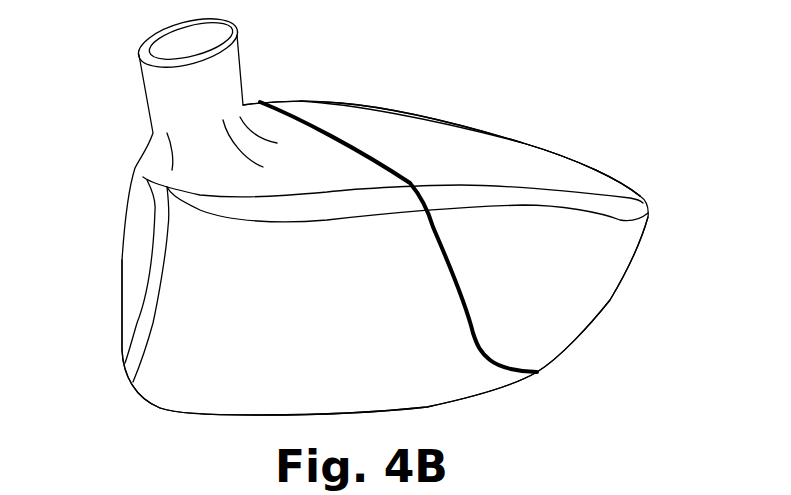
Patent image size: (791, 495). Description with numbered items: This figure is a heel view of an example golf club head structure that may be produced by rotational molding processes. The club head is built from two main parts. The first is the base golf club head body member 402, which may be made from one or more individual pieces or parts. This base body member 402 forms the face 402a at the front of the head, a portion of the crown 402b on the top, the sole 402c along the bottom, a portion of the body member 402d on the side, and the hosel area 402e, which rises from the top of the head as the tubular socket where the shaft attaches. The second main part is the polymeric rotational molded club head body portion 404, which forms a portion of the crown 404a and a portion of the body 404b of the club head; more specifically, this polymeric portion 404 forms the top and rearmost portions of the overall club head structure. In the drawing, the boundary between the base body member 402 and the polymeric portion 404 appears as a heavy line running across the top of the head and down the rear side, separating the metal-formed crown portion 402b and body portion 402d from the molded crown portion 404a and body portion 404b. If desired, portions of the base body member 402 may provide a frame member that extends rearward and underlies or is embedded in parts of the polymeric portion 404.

The base golf club head body member 402 is at (120, 112).
The face 402a is at (132, 237).
The portion of the crown 402b is at (267, 118).
The sole 402c is at (230, 415).
The portion of the body member 402d is at (307, 291).
The hosel area 402e is at (147, 53).
The polymeric rotational molded club head body portion 404 is at (600, 166).
The portion of the crown 404a is at (473, 150).
The portion of the body 404b is at (595, 260).